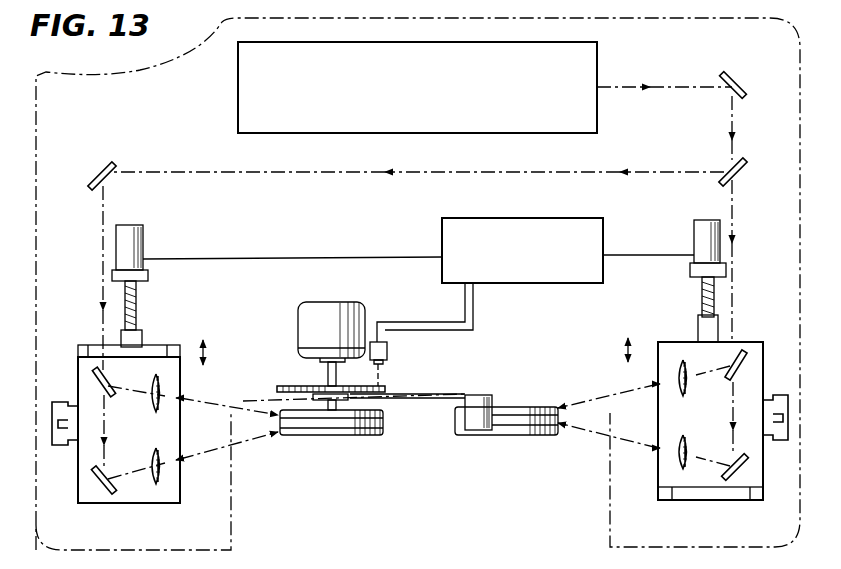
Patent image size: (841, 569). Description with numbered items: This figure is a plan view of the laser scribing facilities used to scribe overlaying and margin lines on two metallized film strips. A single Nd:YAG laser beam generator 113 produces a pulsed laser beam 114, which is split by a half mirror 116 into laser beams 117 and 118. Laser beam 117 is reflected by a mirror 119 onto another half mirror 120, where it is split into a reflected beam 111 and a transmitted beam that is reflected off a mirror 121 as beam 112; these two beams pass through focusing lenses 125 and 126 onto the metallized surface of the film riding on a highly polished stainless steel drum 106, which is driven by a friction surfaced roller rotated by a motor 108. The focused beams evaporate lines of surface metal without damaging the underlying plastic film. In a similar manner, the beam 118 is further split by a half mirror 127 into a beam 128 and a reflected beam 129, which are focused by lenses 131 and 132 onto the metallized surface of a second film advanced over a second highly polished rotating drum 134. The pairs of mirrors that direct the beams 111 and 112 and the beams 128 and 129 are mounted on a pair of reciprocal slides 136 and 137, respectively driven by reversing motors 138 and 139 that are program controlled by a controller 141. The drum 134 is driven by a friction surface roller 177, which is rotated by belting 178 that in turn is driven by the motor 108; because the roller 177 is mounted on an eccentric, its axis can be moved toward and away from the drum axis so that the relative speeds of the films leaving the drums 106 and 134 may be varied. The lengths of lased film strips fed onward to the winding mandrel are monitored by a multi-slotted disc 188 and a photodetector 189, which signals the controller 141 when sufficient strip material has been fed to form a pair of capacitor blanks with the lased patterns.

The polished stainless steel drum 106 is at (342, 437).
The motor 108 is at (308, 334).
The pulsed laser beam 111 is at (211, 402).
The pulsed laser beam 112 is at (233, 442).
The Nd:YAG laser beam generator 113 is at (422, 102).
The pulsed laser beam 114 is at (686, 85).
The half mirror 116 is at (742, 177).
The laser beam 117 is at (490, 172).
The laser beam 118 is at (732, 232).
The mirror 119 is at (99, 175).
The half mirror 120 is at (90, 374).
The mirror 121 is at (98, 482).
The focusing lens 125 is at (152, 376).
The focusing lens 126 is at (152, 486).
The half mirror 127 is at (735, 356).
The laser beam 128 is at (617, 392).
The reflected laser beam 129 is at (598, 432).
The lens 131 is at (676, 368).
The lens 132 is at (675, 455).
The second rotating drum 134 is at (457, 437).
The reciprocal slide 136 is at (180, 484).
The reciprocal slide 137 is at (690, 488).
The reversing motor 138 is at (143, 236).
The reversing motor 139 is at (693, 238).
The controller 141 is at (530, 259).
The friction surface roller 177 is at (477, 395).
The belting 178 is at (432, 392).
The multi-slotted disc 188 is at (299, 384).
The photodetector 189 is at (388, 352).